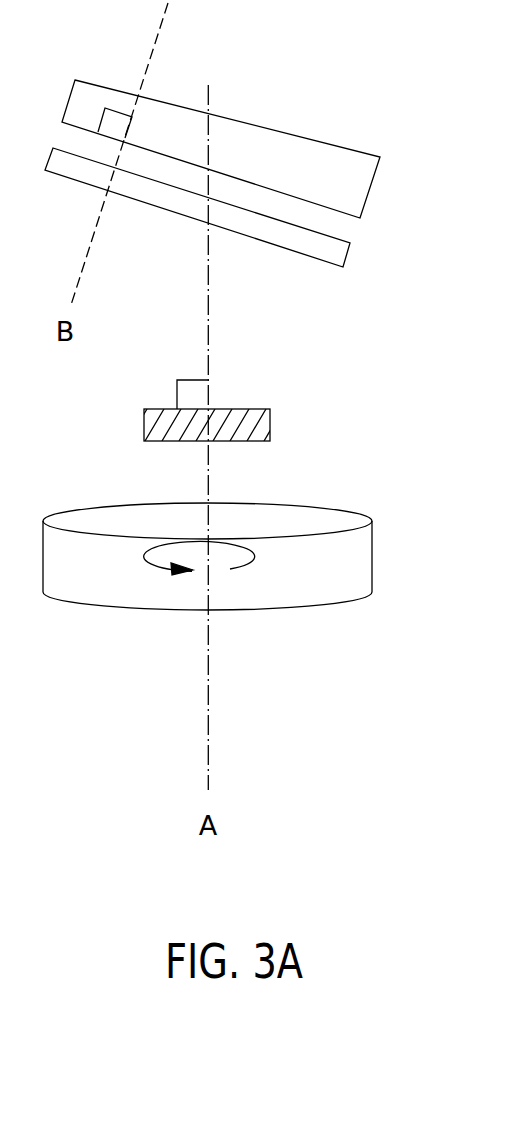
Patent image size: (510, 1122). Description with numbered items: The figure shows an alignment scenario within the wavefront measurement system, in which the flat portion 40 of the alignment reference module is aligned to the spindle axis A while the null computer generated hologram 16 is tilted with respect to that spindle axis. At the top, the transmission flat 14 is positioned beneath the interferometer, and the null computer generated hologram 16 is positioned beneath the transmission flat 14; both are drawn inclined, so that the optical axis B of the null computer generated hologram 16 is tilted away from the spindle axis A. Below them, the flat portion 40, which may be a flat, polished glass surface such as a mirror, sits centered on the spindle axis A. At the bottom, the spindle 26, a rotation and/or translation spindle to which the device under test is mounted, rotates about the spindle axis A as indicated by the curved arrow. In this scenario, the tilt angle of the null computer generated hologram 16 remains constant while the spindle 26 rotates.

The transmission flat 14 is at (353, 197).
The null computer generated hologram 16 is at (340, 258).
The flat portion 40 is at (268, 425).
The spindle 26 is at (357, 562).